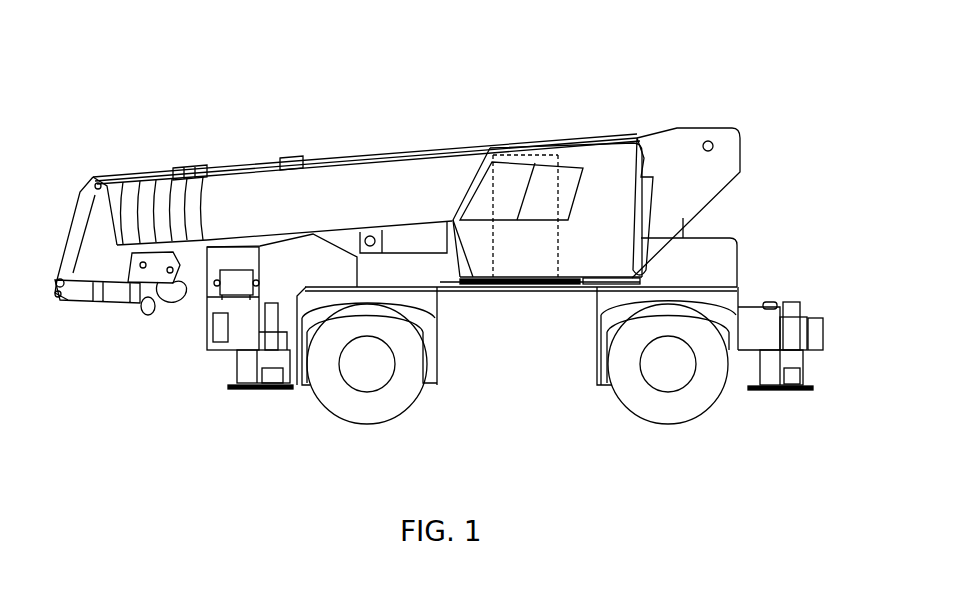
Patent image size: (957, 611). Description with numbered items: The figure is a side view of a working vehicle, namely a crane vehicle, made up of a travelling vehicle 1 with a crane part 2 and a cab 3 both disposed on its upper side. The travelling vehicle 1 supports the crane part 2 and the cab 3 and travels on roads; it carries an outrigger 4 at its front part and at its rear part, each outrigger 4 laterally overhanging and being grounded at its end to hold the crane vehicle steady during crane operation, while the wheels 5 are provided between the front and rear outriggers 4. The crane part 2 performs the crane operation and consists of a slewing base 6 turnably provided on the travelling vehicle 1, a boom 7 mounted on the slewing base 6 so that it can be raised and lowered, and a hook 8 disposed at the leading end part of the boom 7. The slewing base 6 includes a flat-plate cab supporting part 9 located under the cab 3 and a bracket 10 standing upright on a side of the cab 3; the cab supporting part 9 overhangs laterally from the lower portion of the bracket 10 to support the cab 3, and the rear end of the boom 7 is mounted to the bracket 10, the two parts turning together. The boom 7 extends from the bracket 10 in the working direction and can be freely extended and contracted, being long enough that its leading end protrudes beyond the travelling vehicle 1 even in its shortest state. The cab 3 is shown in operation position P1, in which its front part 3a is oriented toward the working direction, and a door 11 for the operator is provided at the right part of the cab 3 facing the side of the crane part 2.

The travelling vehicle 1 is at (735, 292).
The crane part 2 is at (427, 93).
The cab 3 is at (637, 138).
The front part 3a is at (470, 150).
The outrigger 4 is at (792, 303).
The wheel 5 is at (678, 426).
The slewing base 6 is at (783, 175).
The boom 7 is at (327, 155).
The hook 8 is at (142, 310).
The cab supporting part 9 is at (637, 272).
The bracket 10 is at (741, 149).
The door 11 is at (537, 152).
The operation position P1 is at (590, 128).